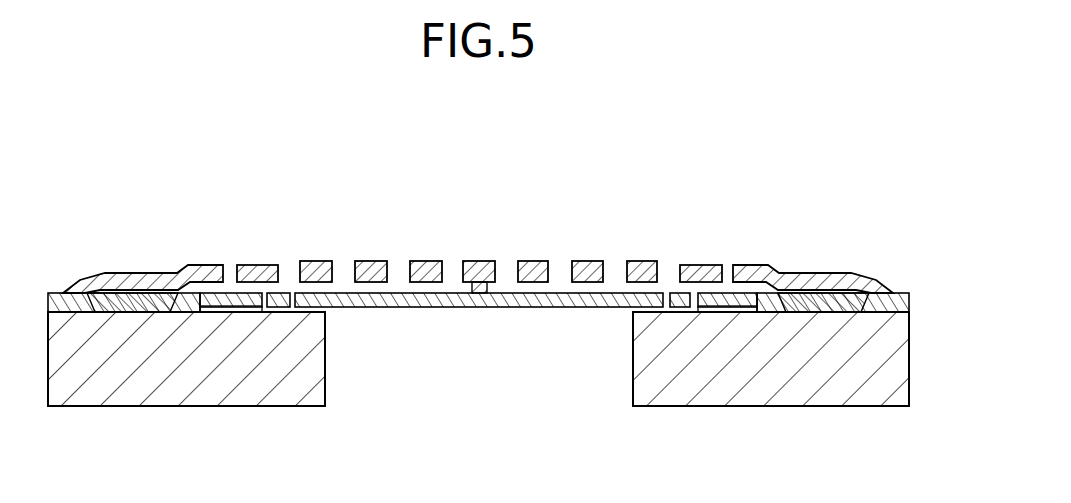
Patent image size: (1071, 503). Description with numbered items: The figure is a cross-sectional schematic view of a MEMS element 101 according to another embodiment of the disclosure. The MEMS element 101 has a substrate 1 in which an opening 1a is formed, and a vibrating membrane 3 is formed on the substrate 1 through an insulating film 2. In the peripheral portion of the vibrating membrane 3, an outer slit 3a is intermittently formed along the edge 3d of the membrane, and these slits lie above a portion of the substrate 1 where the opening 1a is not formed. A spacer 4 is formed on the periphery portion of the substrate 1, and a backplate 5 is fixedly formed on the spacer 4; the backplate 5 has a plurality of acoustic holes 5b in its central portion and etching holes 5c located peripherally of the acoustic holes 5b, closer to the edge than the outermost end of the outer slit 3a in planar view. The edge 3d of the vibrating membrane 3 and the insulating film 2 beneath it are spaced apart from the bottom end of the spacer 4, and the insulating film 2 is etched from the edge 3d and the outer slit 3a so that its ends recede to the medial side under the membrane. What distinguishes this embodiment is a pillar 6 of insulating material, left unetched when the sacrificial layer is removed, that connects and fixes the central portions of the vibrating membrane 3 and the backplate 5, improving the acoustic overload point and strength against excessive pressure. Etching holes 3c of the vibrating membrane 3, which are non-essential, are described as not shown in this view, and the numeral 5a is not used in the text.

The MEMS element 101 is at (797, 160).
The substrate 1 is at (708, 397).
The opening 1a is at (630, 360).
The insulating film 2 is at (740, 313).
The vibrating membrane 3 is at (437, 307).
The outer slit 3a is at (263, 314).
The etching holes 3c is at (291, 314).
The edge 3d is at (186, 300).
The spacer 4 is at (885, 292).
The backplate 5 is at (862, 273).
The electrode pad 5a is at (650, 262).
The acoustic holes 5b is at (288, 268).
The etching holes 5c is at (232, 268).
The pillar 6 is at (462, 262).